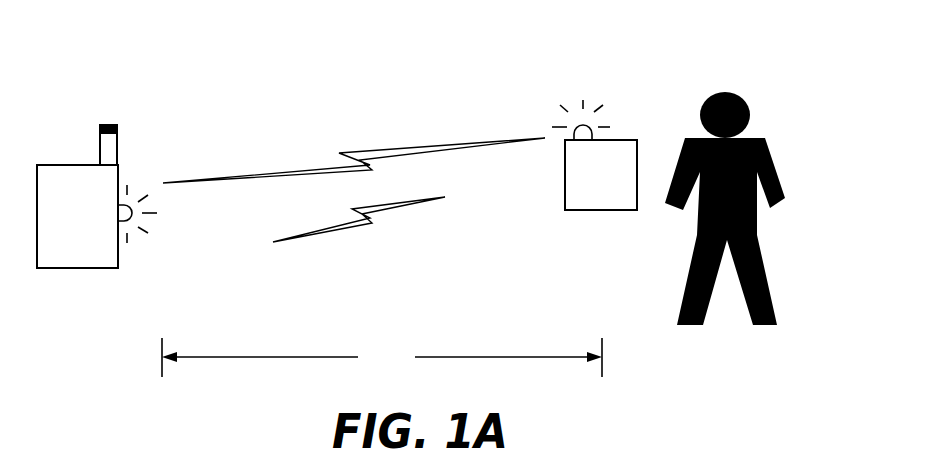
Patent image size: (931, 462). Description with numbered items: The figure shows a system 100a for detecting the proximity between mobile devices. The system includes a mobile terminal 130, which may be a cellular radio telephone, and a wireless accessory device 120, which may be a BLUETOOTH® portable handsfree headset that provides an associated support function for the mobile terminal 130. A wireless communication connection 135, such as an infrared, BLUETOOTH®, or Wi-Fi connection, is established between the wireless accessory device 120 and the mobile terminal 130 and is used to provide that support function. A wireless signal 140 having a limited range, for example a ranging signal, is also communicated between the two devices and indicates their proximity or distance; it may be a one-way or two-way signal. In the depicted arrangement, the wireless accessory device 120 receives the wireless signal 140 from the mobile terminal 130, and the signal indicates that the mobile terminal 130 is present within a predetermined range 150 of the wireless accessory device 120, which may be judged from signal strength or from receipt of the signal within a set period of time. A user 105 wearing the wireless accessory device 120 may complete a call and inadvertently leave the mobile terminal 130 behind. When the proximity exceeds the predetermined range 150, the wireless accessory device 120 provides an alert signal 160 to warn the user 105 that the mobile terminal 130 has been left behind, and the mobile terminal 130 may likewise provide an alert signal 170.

The system 100a is at (245, 62).
The user 105 is at (773, 162).
The wireless accessory device 120 is at (620, 326).
The mobile terminal 130 is at (98, 354).
The wireless communication connection 135 is at (342, 153).
The wireless signal 140 is at (374, 205).
The predetermined range 150 is at (382, 357).
The alert signal 160 is at (588, 108).
The alert signal 170 is at (132, 192).